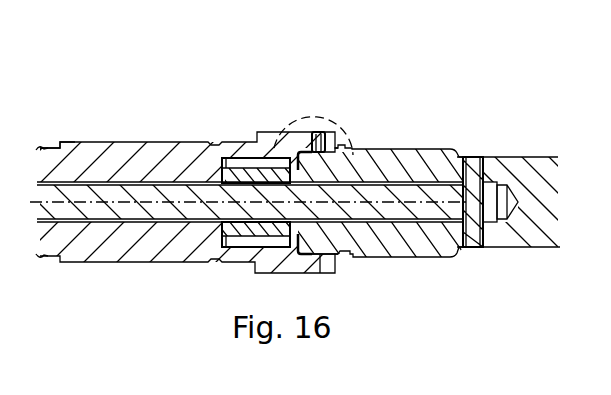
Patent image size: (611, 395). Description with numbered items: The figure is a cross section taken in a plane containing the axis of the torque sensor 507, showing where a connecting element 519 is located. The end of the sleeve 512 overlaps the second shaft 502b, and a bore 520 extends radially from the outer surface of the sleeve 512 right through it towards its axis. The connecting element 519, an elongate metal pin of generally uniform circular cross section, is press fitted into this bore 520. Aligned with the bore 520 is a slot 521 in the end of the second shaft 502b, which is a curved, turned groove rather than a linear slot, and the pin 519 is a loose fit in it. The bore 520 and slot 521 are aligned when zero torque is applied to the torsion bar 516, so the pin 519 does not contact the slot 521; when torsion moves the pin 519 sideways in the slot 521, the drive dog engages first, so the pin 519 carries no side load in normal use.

The torque sensor 507 is at (64, 127).
The sleeve 512 is at (186, 152).
The torsion bar 516 is at (108, 192).
The connecting element 519 is at (322, 130).
The bore 520 is at (298, 132).
The slot 521 is at (352, 155).
The second shaft 502b is at (420, 162).